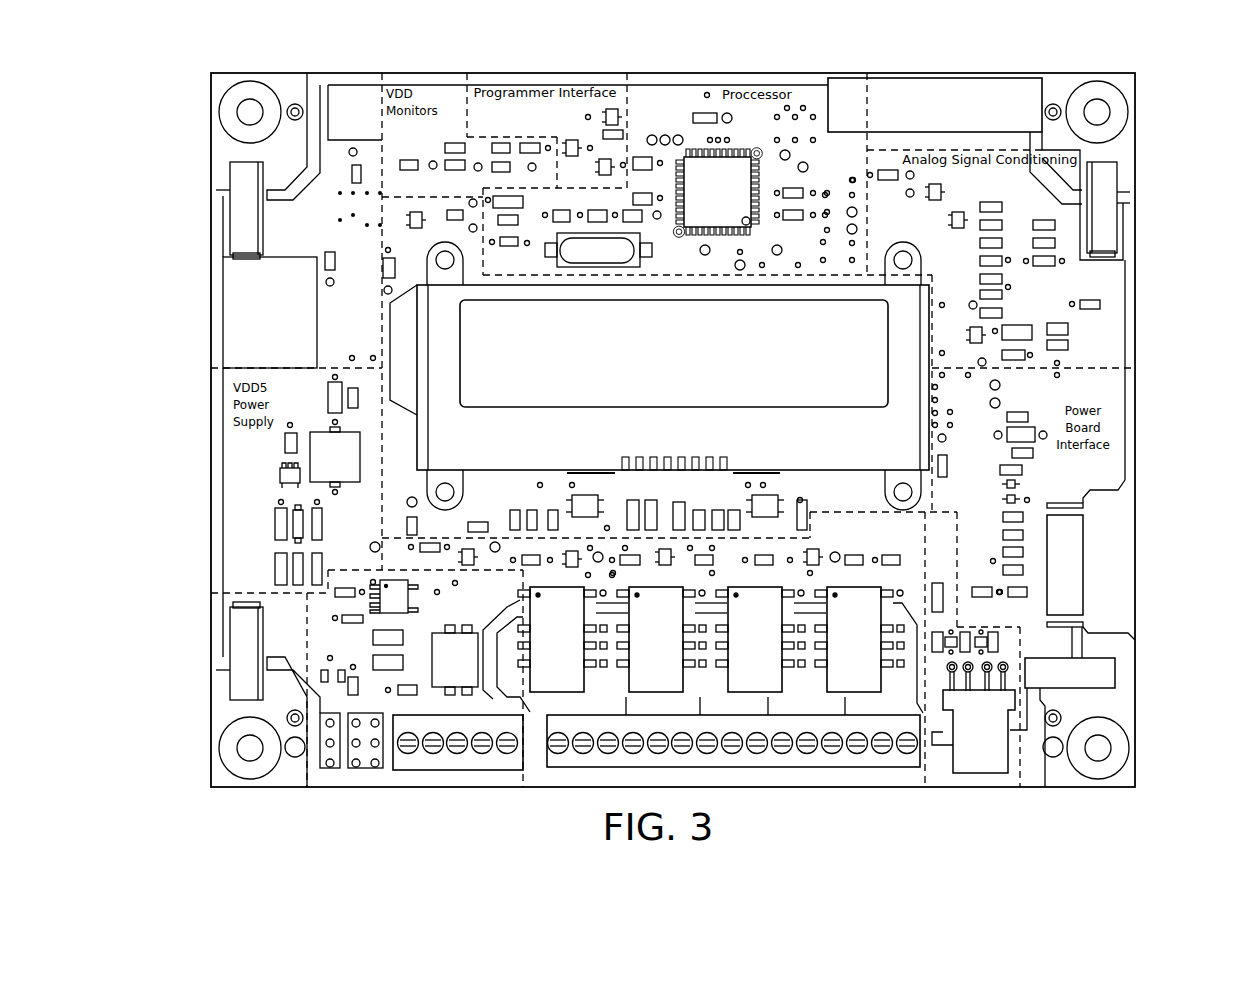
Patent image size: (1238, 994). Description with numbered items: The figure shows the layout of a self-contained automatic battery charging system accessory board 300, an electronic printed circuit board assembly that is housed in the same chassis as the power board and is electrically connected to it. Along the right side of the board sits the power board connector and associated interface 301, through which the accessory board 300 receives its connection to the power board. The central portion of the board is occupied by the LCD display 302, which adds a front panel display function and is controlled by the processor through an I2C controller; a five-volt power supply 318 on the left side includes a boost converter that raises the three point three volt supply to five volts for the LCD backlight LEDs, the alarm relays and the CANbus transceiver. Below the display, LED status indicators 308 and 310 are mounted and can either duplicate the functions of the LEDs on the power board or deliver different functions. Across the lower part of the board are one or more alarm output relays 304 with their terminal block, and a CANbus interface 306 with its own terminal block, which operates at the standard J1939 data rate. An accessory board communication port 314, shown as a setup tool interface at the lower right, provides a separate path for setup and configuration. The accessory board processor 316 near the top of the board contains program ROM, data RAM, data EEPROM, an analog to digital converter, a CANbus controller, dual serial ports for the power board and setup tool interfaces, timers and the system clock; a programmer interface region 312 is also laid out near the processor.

The accessory board 300 is at (1136, 794).
The power board connector and associated interface 301 is at (1133, 604).
The LCD display 302 is at (660, 450).
The alarm output relays 304 is at (893, 788).
The CANbus interface 306 is at (422, 788).
The LED status indicator 308 is at (585, 493).
The LED status indicator 310 is at (766, 493).
The programmer interface 312 is at (474, 71).
The accessory board communication port 314 is at (1005, 786).
The accessory board processor 316 is at (853, 70).
The five-volt power supply 318 is at (240, 476).